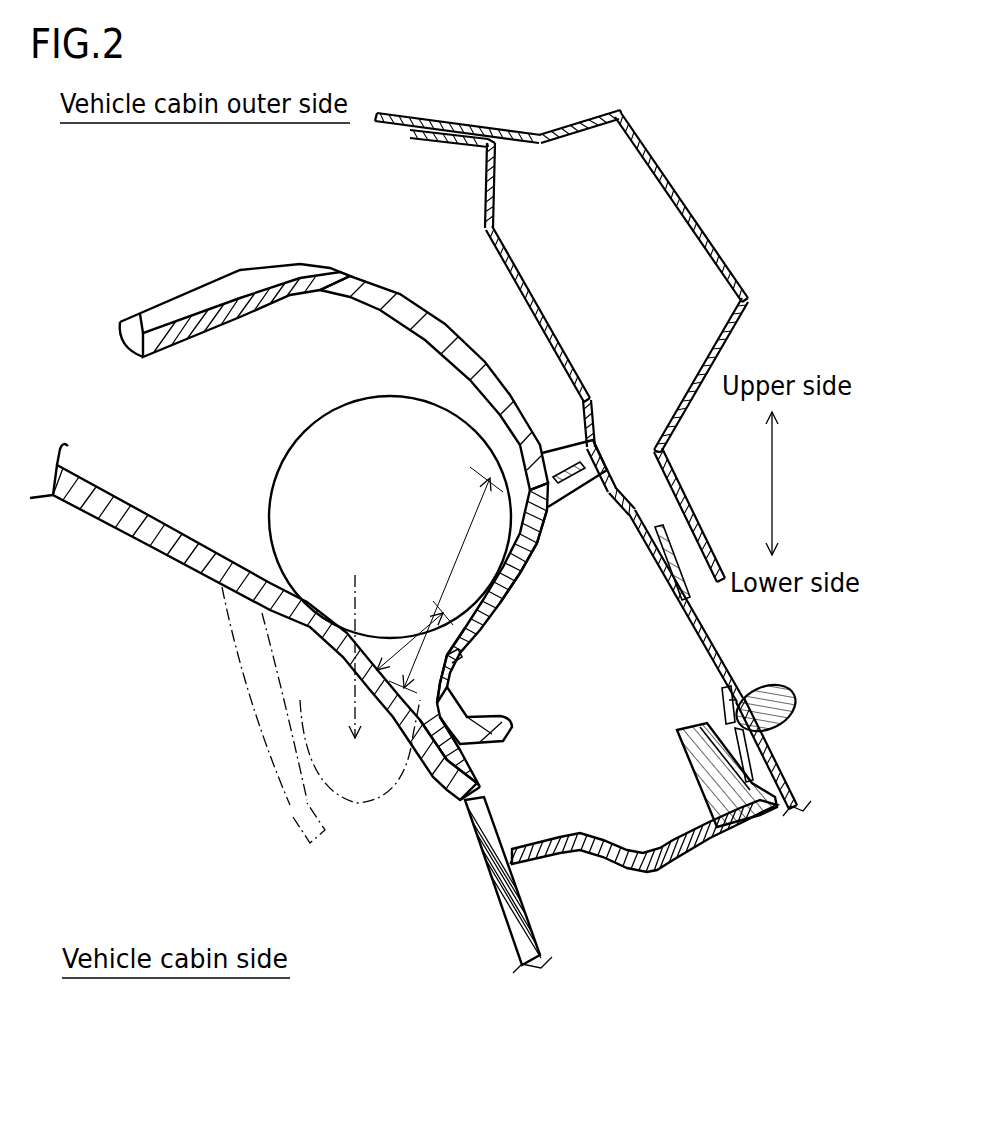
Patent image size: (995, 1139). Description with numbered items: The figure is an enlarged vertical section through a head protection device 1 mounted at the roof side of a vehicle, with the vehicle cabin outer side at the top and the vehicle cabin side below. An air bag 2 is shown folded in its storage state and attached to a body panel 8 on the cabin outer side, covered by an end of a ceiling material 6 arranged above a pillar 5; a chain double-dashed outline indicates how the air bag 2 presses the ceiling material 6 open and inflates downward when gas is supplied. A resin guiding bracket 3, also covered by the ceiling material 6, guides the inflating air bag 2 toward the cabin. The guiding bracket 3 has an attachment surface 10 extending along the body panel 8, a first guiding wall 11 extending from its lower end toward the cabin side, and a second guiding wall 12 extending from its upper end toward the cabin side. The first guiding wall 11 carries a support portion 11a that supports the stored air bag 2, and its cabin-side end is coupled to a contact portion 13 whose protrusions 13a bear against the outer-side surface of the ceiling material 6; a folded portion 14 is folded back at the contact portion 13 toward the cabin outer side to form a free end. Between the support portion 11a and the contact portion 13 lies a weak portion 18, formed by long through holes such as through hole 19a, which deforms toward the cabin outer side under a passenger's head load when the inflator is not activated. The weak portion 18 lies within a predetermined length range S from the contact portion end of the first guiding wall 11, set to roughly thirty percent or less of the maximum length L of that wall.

The head protection device 1 is at (233, 673).
The air bag 2 is at (273, 480).
The guiding bracket 3 is at (327, 263).
The pillar 5 is at (493, 890).
The ceiling material 6 is at (177, 557).
The body panel 8 is at (480, 193).
The attachment surface 10 is at (440, 337).
The first guiding wall 11 is at (500, 608).
The support portion 11a is at (512, 592).
The second guiding wall 12 is at (197, 313).
The contact portion 13 is at (439, 775).
The protrusions 13a is at (414, 775).
The folded portion 14 is at (506, 738).
The weak portion 18 is at (493, 655).
The through hole 19a is at (460, 668).
The maximum length of the guiding wall L is at (457, 540).
The predetermined length range S is at (395, 663).